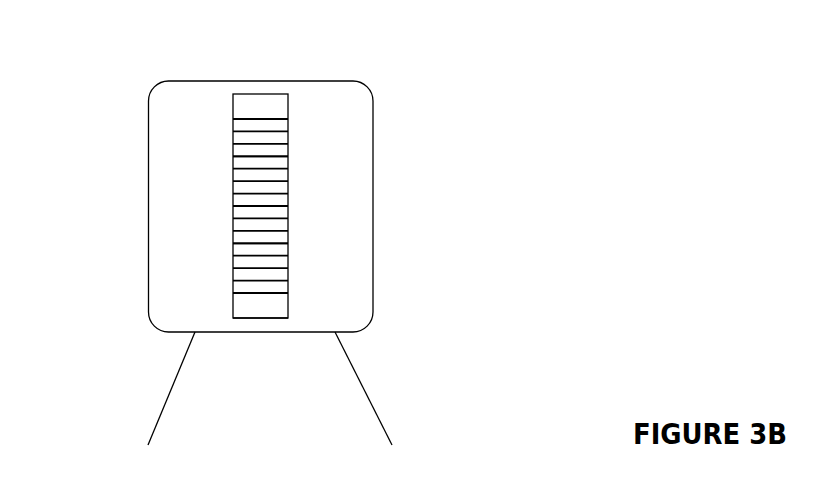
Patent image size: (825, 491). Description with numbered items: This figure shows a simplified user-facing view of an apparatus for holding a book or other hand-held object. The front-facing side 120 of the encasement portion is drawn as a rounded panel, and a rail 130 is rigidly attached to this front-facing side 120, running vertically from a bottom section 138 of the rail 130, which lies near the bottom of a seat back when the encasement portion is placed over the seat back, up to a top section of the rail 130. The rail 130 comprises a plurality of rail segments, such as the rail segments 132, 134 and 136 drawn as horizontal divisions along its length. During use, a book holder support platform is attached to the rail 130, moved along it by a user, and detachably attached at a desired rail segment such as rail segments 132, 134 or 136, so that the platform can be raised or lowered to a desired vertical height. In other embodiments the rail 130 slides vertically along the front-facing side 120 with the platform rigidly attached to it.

The front-facing side 120 is at (355, 134).
The rail 130 is at (260, 93).
The rail segment 132 is at (240, 157).
The rail segment 134 is at (265, 207).
The rail segment 136 is at (258, 243).
The bottom section 138 is at (262, 318).